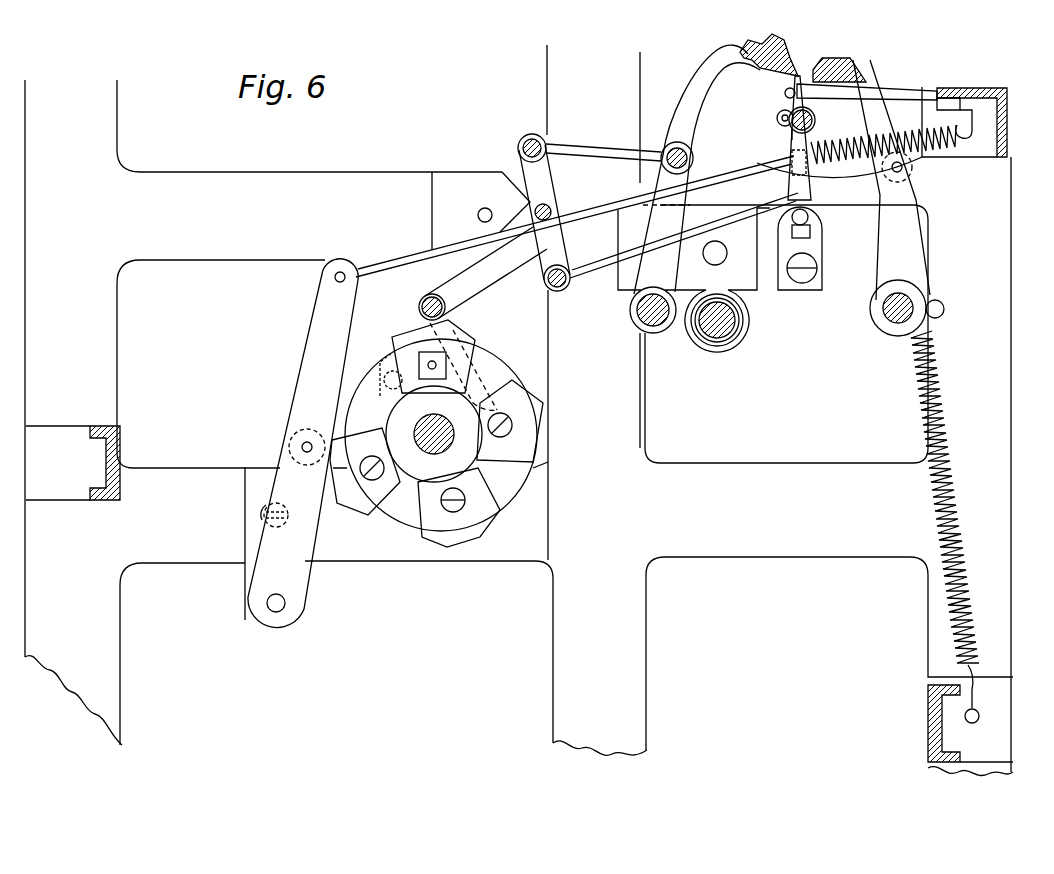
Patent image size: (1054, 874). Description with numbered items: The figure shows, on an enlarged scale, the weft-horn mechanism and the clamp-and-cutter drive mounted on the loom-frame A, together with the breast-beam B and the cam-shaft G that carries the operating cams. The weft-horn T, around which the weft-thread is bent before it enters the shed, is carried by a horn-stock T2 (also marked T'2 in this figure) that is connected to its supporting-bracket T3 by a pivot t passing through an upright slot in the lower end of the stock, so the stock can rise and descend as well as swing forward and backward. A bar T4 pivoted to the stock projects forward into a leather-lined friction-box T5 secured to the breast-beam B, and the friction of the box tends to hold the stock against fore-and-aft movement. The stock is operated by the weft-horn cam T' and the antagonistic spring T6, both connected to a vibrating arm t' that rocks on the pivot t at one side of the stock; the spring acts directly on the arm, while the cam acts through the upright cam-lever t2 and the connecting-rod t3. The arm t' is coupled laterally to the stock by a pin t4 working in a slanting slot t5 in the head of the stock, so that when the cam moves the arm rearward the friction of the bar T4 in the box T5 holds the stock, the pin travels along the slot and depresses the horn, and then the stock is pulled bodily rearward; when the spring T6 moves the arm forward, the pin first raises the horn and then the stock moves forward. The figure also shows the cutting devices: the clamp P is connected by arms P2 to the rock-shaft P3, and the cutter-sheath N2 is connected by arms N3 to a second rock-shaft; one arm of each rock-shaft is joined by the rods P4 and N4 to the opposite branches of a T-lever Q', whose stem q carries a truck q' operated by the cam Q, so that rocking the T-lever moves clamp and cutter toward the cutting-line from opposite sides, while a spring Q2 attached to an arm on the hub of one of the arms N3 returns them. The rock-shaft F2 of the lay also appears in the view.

The loom-frame A is at (519, 410).
The breast-beam B is at (1012, 116).
The cam-shaft G is at (414, 427).
The cam Q is at (461, 432).
The weft-horn cam T' is at (365, 471).
The truck q' is at (418, 306).
The stem q is at (486, 272).
The T-lever Q' is at (515, 215).
The spring Q2 is at (945, 527).
The upright cam-lever t2 is at (301, 443).
The connecting-rod t3 is at (577, 213).
The clamp P is at (797, 76).
The arms P2 is at (653, 299).
The rock-shaft P3 is at (629, 312).
The rod P4 is at (585, 201).
The sheath N2 is at (838, 52).
The arms N3 is at (880, 243).
The rod N4 is at (868, 313).
The rock-shaft of the lay F2 is at (718, 300).
The weft-horn T is at (779, 136).
The lever pin T'2 is at (767, 133).
The horn-stock T2 is at (823, 226).
The supporting-bracket T3 is at (800, 248).
The friction-bar T4 is at (867, 81).
The friction-box T5 is at (937, 118).
The spring T6 is at (883, 141).
The pivot t is at (799, 207).
The vibrating arm t' is at (796, 169).
The pin t4 is at (807, 115).
The slanting slot t5 is at (774, 114).